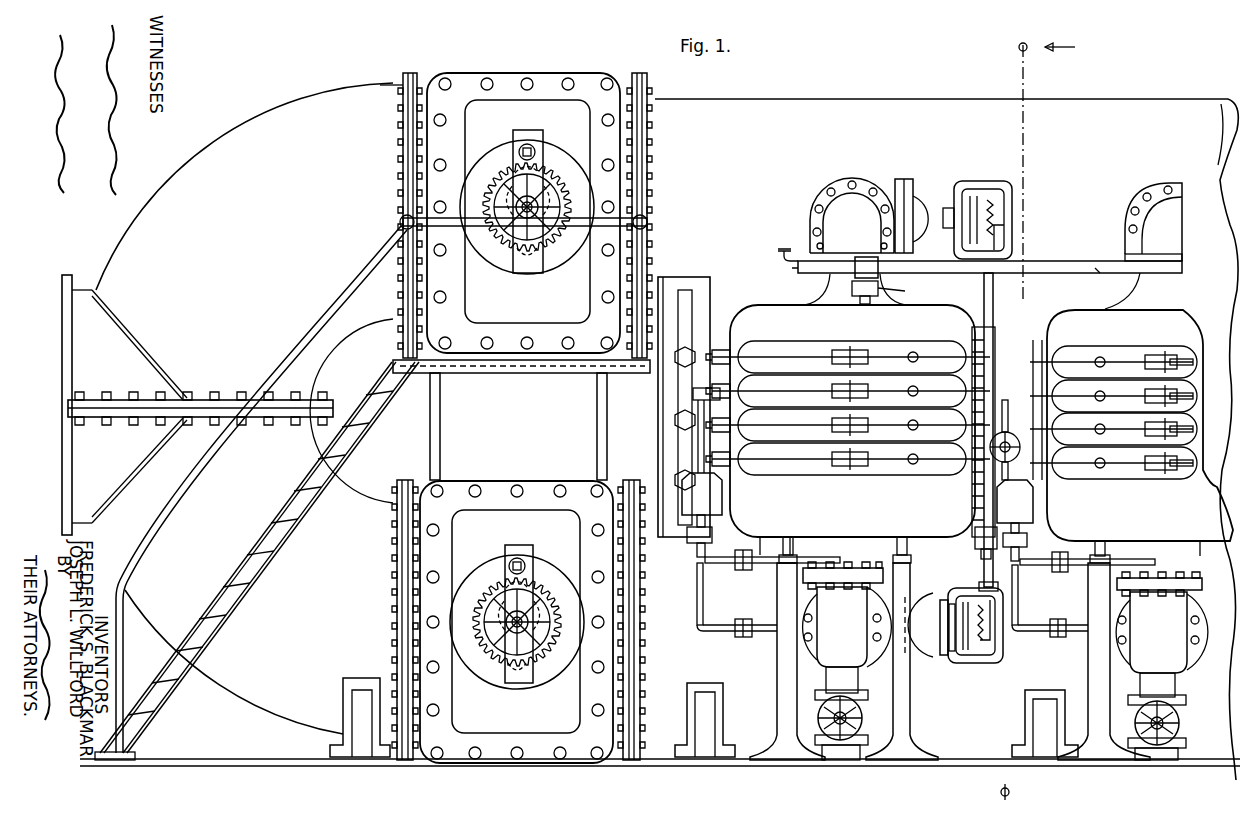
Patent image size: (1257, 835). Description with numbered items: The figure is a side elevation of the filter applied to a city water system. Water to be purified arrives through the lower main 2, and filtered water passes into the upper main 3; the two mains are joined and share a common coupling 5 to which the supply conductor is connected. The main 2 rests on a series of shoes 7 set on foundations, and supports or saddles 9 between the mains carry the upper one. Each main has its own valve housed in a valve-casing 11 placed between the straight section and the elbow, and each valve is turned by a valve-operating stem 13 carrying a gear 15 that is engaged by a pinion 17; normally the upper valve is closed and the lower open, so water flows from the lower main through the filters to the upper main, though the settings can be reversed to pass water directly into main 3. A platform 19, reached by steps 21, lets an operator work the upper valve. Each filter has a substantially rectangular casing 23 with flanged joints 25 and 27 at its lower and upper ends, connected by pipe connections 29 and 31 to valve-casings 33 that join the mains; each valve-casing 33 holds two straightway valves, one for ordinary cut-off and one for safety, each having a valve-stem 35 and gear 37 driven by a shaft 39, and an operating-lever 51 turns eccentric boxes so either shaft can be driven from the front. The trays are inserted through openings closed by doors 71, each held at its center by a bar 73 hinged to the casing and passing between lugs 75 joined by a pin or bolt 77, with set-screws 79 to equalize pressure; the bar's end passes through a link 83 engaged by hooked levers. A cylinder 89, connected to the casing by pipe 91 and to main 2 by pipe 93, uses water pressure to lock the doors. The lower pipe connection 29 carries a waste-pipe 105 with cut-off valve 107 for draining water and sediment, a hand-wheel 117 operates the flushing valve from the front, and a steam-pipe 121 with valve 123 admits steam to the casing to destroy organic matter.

The pipe, main, or conductor 2 is at (251, 677).
The pipe, main, or conductor 3 is at (742, 104).
The common coupling 5 is at (197, 405).
The shoes 7 is at (343, 696).
The supports or saddles 9 is at (656, 416).
The valve-casings 11 is at (522, 418).
The valve-operating stem 13 is at (540, 195).
The gear 15 is at (505, 182).
The pinion 17 is at (512, 142).
The platform 19 is at (487, 364).
The steps 21 is at (297, 518).
The casing 23 is at (930, 322).
The flanged joint 25 is at (853, 548).
The flanged joint 27 is at (830, 283).
The pipe connection 29 is at (1005, 617).
The pipe connection 31 is at (842, 223).
The valve-casings 33 is at (872, 180).
The valve-stem 35 is at (987, 200).
The gear 37 is at (1000, 196).
The shaft 39 is at (996, 298).
The operating-lever 51 is at (976, 542).
The door 71 is at (772, 385).
The bar 73 is at (826, 355).
The lugs 75 is at (1190, 366).
The pin or bolt 77 is at (858, 350).
The set-screw 79 is at (914, 352).
The link 83 is at (735, 390).
The cylinder 89 is at (857, 517).
The pipe 91 is at (760, 564).
The pipe 93 is at (703, 605).
The waste-pipe 105 is at (836, 686).
The cut-off valve 107 is at (862, 718).
The hand-wheel 117 is at (1000, 436).
The steam-pipe 121 is at (1100, 275).
The valve 123 is at (870, 298).